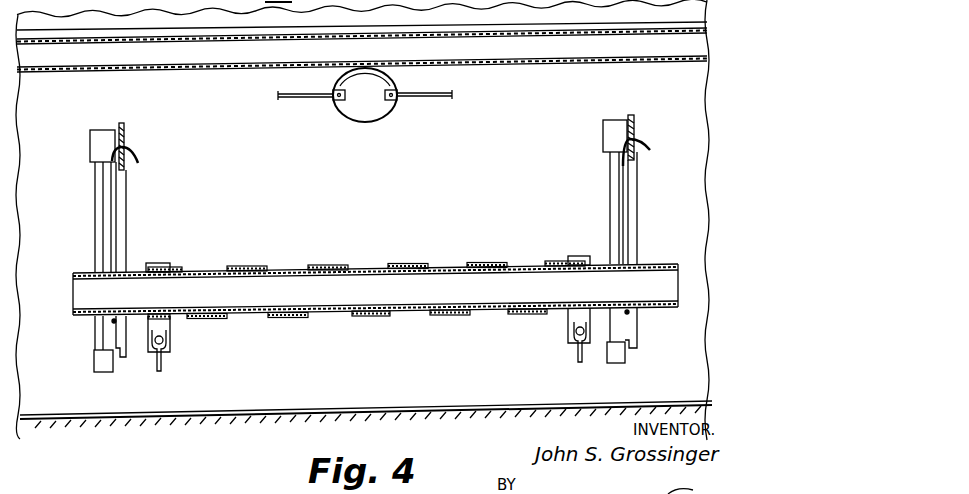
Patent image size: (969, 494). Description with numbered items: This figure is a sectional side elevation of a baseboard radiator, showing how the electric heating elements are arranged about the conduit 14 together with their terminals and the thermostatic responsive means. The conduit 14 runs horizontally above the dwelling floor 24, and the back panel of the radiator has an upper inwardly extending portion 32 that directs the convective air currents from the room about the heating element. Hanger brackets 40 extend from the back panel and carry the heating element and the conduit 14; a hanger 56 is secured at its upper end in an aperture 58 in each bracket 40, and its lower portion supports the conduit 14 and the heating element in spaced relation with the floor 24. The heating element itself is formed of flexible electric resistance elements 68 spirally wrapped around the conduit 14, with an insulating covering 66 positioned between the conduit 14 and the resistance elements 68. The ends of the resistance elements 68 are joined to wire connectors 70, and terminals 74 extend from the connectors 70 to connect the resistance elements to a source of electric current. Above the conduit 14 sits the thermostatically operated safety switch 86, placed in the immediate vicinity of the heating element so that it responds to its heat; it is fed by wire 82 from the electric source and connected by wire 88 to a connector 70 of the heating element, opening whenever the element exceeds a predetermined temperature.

The conduit 14 is at (79, 318).
The dwelling floor 24 is at (139, 418).
The upper inwardly extending portion 32 is at (549, 64).
The hanger bracket 40 is at (122, 127).
The hanger 56 is at (143, 156).
The aperture 58 is at (127, 147).
The insulating covering 66 is at (389, 315).
The flexible electric resistance element 68 is at (272, 322).
The wire connector 70 is at (159, 262).
The terminal 74 is at (171, 363).
The wire 82 is at (280, 97).
The thermostatically operated safety switch 86 is at (340, 107).
The wire 88 is at (428, 95).